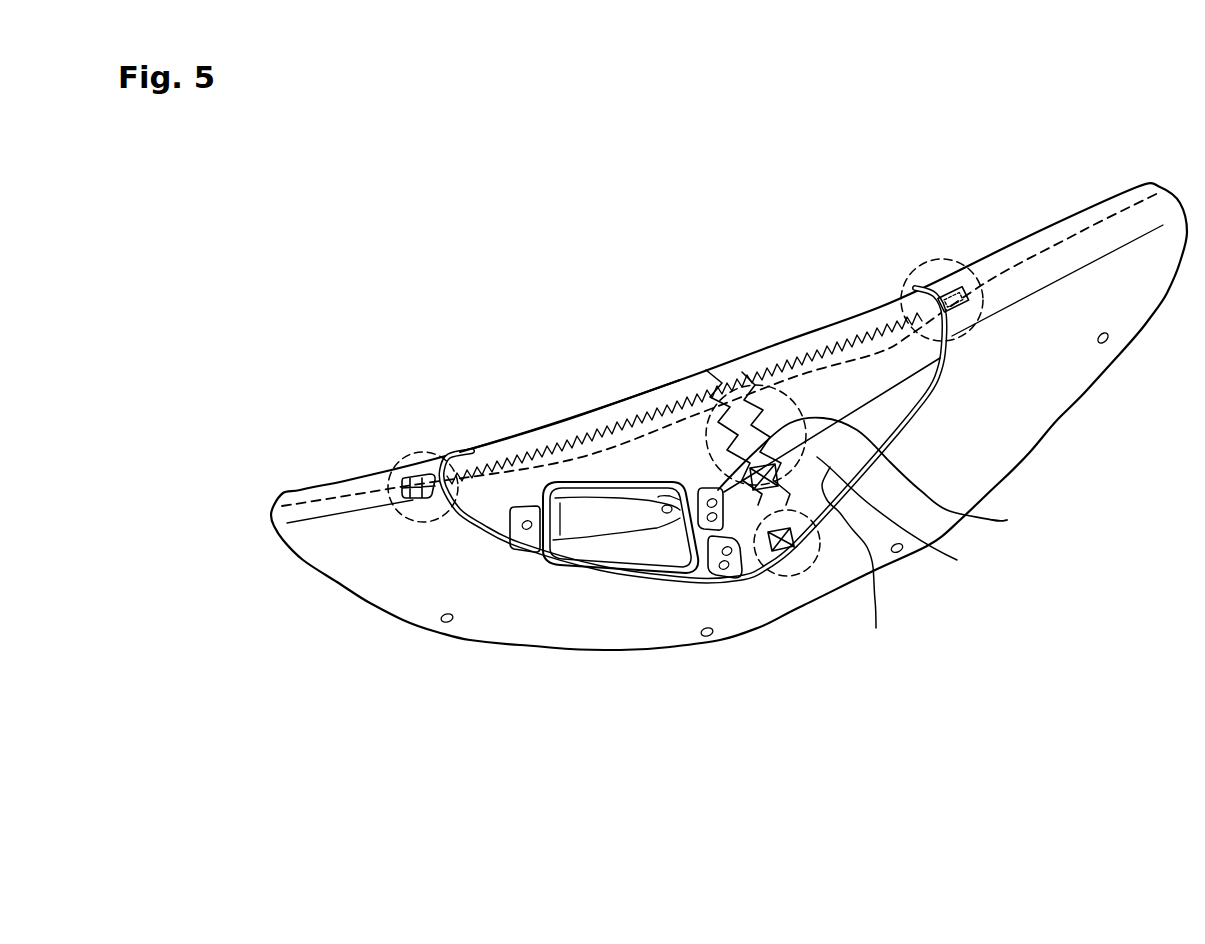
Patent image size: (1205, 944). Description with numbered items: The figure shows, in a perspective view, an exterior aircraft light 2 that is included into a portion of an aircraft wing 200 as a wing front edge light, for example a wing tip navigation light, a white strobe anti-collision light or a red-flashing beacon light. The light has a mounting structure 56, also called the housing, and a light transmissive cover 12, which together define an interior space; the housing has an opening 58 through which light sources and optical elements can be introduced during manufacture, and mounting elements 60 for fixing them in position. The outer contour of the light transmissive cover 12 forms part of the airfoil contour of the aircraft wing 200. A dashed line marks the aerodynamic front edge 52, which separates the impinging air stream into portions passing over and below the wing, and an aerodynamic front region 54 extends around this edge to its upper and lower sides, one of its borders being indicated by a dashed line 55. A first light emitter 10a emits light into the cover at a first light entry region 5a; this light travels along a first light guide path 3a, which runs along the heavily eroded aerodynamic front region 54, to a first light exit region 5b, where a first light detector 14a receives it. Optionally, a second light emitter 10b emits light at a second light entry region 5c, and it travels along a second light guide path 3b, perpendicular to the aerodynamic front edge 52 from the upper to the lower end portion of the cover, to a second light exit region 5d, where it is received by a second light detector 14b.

The exterior aircraft light 2 is at (677, 459).
The first light guide path 3a is at (494, 446).
The second light guide path 3b is at (879, 416).
The first light entry region 5a is at (427, 447).
The first light exit region 5b is at (959, 263).
The second light entry region 5c is at (794, 577).
The second light exit region 5d is at (708, 398).
The first light emitter 10a is at (394, 465).
The second light emitter 10b is at (810, 574).
The light transmissive cover 12 is at (823, 408).
The first light detector 14a is at (925, 272).
The second light detector 14b is at (907, 518).
The aerodynamic front edge 52 is at (670, 402).
The aerodynamic front region 54 is at (605, 424).
The dashed line 55 is at (764, 394).
The mounting structure 56 is at (857, 562).
The opening 58 is at (617, 553).
The mounting elements 60 is at (748, 573).
The aircraft wing 200 is at (1052, 388).